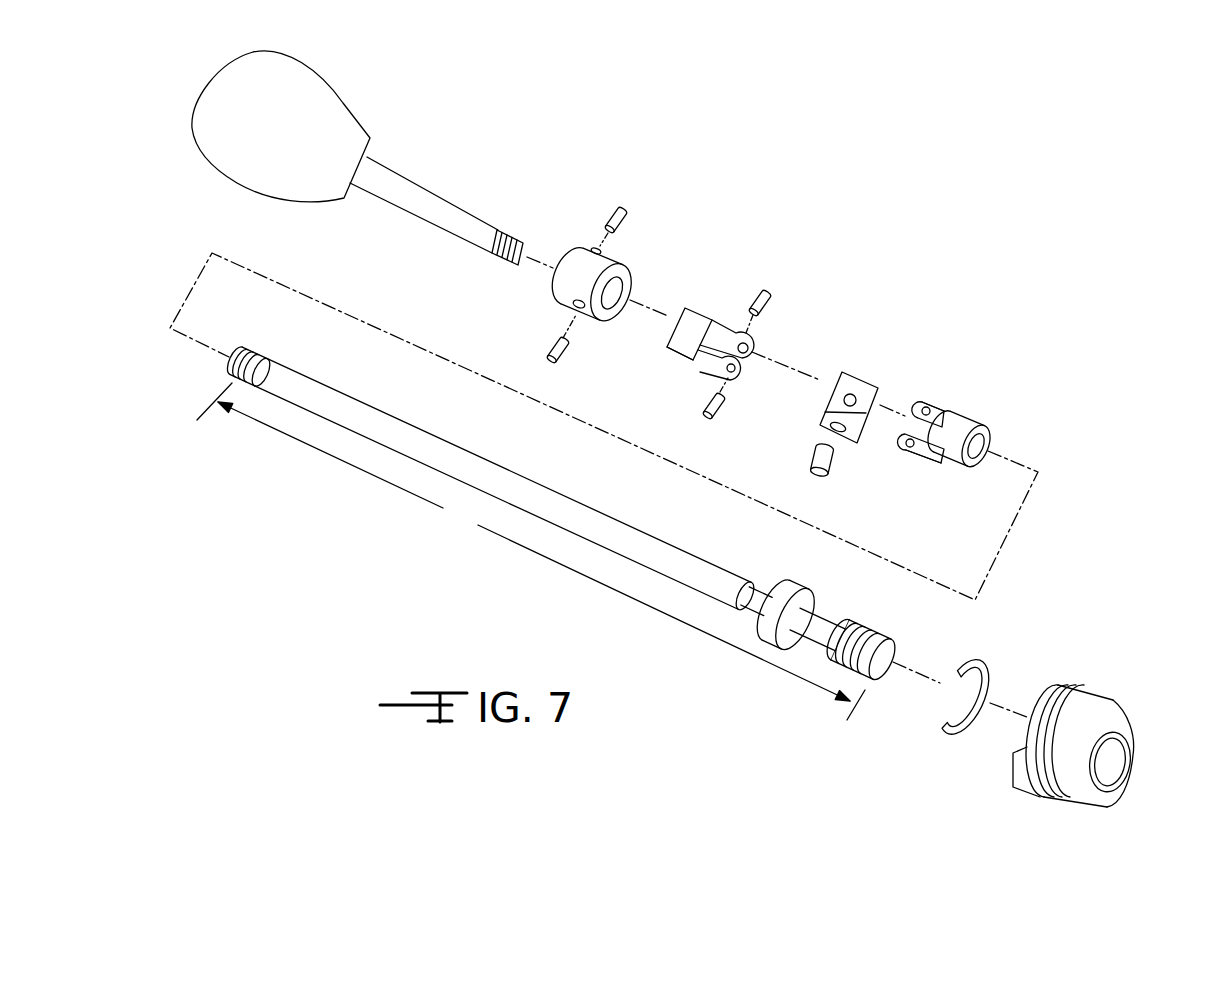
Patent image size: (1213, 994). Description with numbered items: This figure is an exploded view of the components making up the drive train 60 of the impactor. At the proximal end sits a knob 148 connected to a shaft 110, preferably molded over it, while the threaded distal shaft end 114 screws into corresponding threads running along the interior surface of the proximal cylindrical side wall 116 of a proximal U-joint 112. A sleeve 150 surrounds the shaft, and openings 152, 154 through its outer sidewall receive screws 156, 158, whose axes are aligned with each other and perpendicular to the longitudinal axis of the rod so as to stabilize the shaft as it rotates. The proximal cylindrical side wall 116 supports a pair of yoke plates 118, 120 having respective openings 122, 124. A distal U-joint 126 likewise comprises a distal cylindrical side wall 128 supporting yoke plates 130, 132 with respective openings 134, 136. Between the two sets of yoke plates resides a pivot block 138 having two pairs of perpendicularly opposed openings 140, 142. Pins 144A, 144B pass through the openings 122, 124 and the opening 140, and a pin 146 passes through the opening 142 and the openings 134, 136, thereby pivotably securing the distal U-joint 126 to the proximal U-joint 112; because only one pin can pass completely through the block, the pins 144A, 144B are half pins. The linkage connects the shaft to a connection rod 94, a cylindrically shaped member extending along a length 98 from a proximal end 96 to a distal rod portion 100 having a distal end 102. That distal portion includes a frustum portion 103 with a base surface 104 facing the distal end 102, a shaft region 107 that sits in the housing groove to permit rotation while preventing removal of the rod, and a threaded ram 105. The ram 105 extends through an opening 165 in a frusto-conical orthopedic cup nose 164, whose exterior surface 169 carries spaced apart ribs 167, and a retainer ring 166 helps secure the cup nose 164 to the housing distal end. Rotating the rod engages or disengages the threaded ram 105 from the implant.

The drive train 60 is at (898, 245).
The knob 148 is at (330, 127).
The shaft 110 is at (440, 210).
The threaded distal shaft end 114 is at (503, 263).
The sleeve 150 is at (612, 258).
The sleeve opening 154 is at (596, 249).
The sleeve opening 152 is at (581, 312).
The screw 158 is at (618, 210).
The screw 156 is at (552, 345).
The proximal cylindrical side wall 116 is at (700, 330).
The proximal U-joint 112 is at (690, 360).
The yoke plate 118 is at (760, 344).
The yoke plate opening 122 is at (752, 348).
The yoke plate 120 is at (715, 385).
The yoke plate opening 124 is at (734, 375).
The pin 144A is at (765, 290).
The pin 144B is at (706, 412).
The pivot block 138 is at (856, 370).
The pivot block opening 140 is at (858, 405).
The pivot block opening 142 is at (832, 423).
The pin 146 is at (829, 470).
The distal U-joint 126 is at (942, 418).
The distal cylindrical side wall 128 is at (976, 421).
The yoke plate 130 is at (934, 410).
The yoke plate opening 134 is at (926, 405).
The yoke plate 132 is at (925, 457).
The yoke plate opening 136 is at (910, 450).
The proximal end 96 is at (270, 368).
The connection rod 94 is at (650, 556).
The length 98 is at (531, 551).
The distal rod portion 100 is at (866, 616).
The frustum portion 103 is at (795, 585).
The base surface 104 is at (806, 601).
The distal end 102 is at (873, 672).
The threaded ram 105 is at (850, 672).
The shaft region 107 is at (825, 640).
The retainer ring 166 is at (961, 737).
The orthopedic cup nose 164 is at (1084, 690).
The exterior surface 169 is at (1056, 692).
The ribs 167 is at (1030, 780).
The nose opening 165 is at (1106, 760).